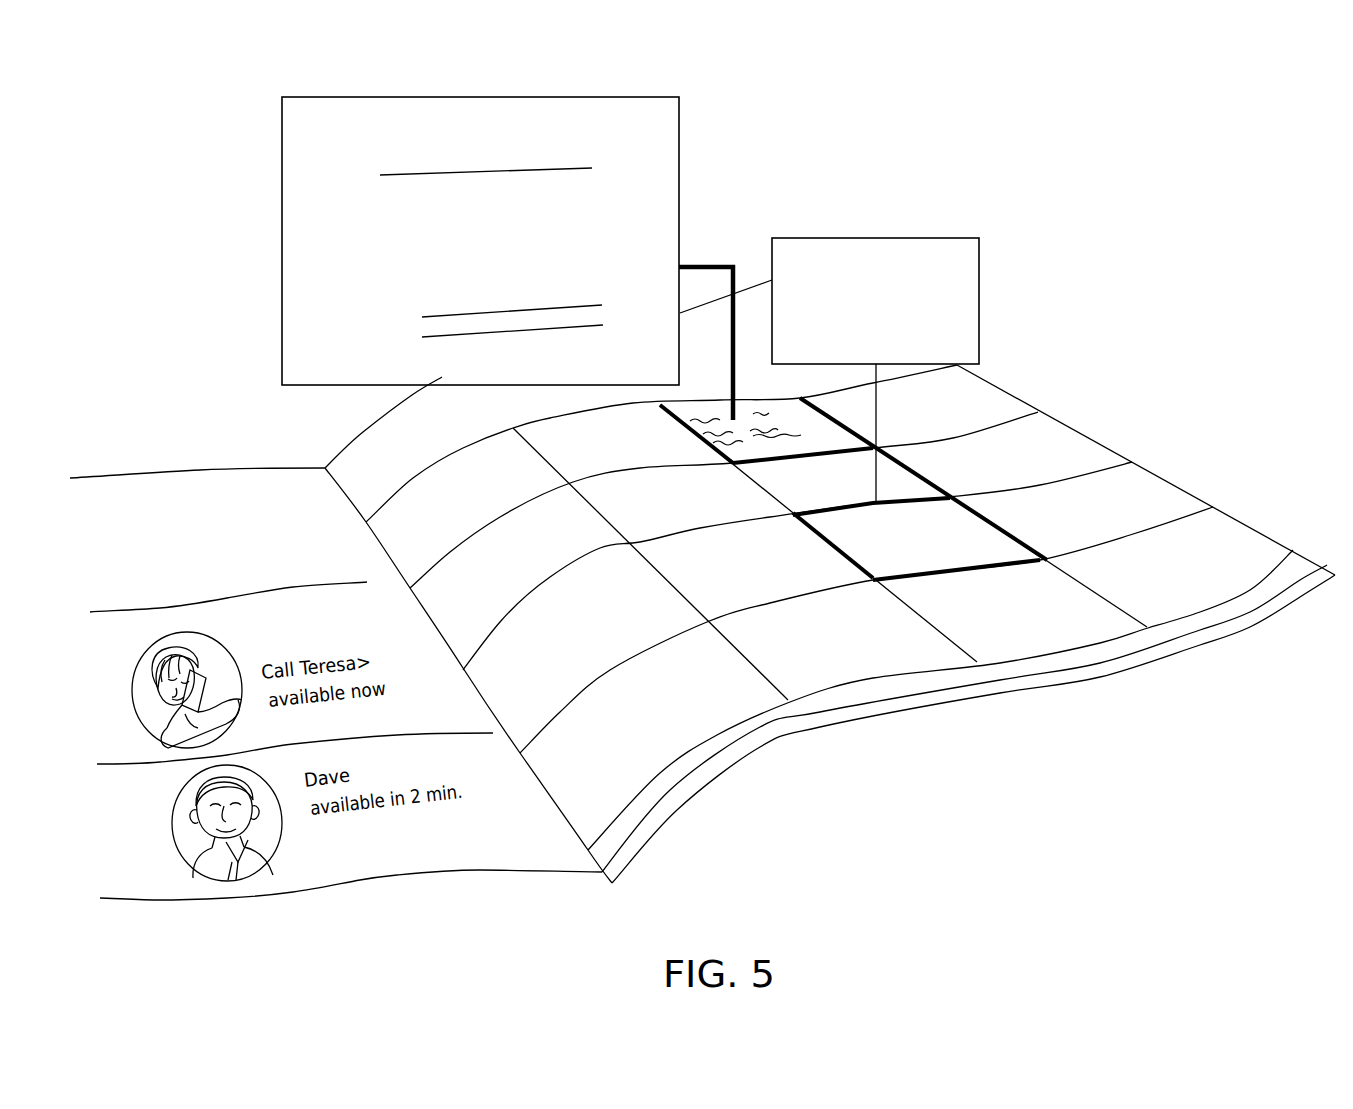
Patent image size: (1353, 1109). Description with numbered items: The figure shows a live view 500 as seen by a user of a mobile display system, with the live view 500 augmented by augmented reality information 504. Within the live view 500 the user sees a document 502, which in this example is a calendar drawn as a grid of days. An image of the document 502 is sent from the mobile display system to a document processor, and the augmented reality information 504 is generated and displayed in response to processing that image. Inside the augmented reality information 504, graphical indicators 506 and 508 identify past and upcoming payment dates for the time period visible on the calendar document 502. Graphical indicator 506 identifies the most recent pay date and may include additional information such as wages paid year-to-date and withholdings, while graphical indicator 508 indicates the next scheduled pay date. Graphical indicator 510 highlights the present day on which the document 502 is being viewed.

The live view 500 is at (1046, 378).
The document 502 is at (1067, 447).
The augmented reality information 504 is at (786, 153).
The graphical indicator 506 is at (282, 241).
The graphical indicator 508 is at (980, 298).
The graphical indicator 510 is at (667, 600).